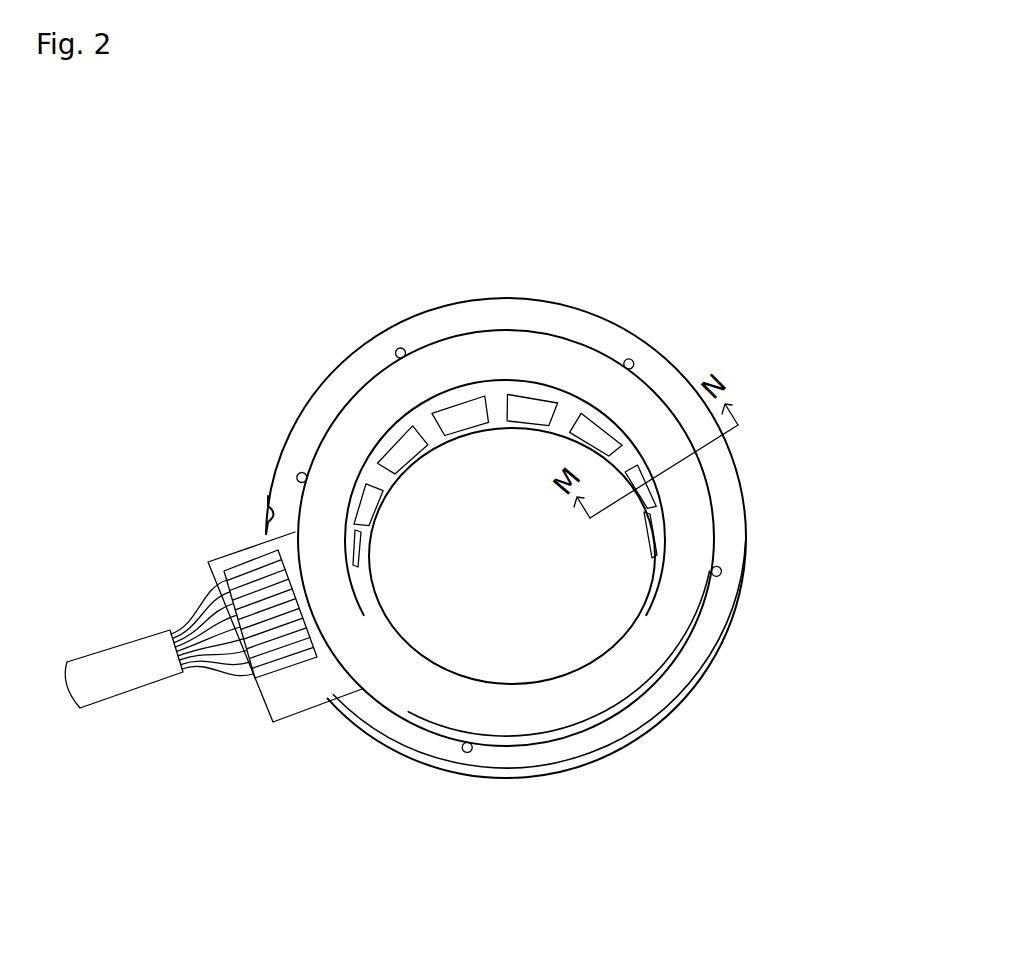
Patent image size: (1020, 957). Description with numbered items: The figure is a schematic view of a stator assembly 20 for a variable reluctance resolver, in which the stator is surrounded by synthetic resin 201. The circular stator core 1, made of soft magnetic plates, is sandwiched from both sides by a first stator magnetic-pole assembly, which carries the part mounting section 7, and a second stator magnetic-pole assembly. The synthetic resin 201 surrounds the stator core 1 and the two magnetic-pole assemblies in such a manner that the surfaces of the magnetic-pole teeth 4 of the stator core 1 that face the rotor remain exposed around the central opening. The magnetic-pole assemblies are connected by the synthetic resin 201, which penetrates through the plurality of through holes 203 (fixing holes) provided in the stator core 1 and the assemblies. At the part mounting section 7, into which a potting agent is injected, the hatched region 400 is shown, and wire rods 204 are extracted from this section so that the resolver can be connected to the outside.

The stator core 1 is at (600, 337).
The stator assembly 20 is at (348, 360).
The synthetic resin 201 is at (353, 415).
The through holes 203 is at (398, 349).
The magnetic-pole teeth 4 is at (478, 402).
The part mounting section 7 is at (265, 712).
The coil / hatched board section 400 is at (253, 582).
The wire rods 204 is at (190, 621).